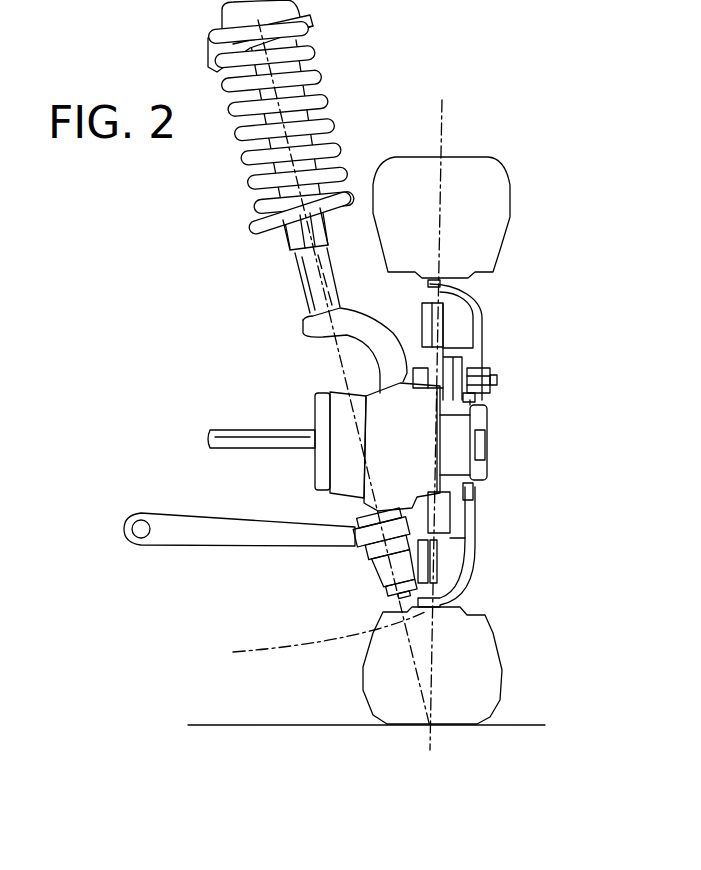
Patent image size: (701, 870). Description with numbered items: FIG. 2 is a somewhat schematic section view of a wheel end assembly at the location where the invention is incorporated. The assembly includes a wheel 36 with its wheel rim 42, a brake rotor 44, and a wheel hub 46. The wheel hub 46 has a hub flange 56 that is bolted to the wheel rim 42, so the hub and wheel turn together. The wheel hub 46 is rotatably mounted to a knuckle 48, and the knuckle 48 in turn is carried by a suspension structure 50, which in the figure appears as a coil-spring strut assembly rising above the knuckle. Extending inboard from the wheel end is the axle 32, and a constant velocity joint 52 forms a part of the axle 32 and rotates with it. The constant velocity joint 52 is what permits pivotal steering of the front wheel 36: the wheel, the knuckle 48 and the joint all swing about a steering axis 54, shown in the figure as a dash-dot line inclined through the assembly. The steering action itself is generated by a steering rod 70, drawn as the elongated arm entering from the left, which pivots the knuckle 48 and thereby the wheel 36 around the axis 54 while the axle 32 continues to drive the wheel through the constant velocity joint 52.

The axle 32 is at (260, 430).
The wheel 36 is at (522, 191).
The wheel rim 42 is at (470, 296).
The brake rotor 44 is at (443, 320).
The wheel hub 46 is at (453, 412).
The knuckle 48 is at (387, 358).
The suspension structure 50 is at (212, 192).
The constant velocity joint 52 is at (347, 483).
The axis 54 is at (310, 639).
The hub flange 56 is at (460, 368).
The steering rod 70 is at (295, 542).